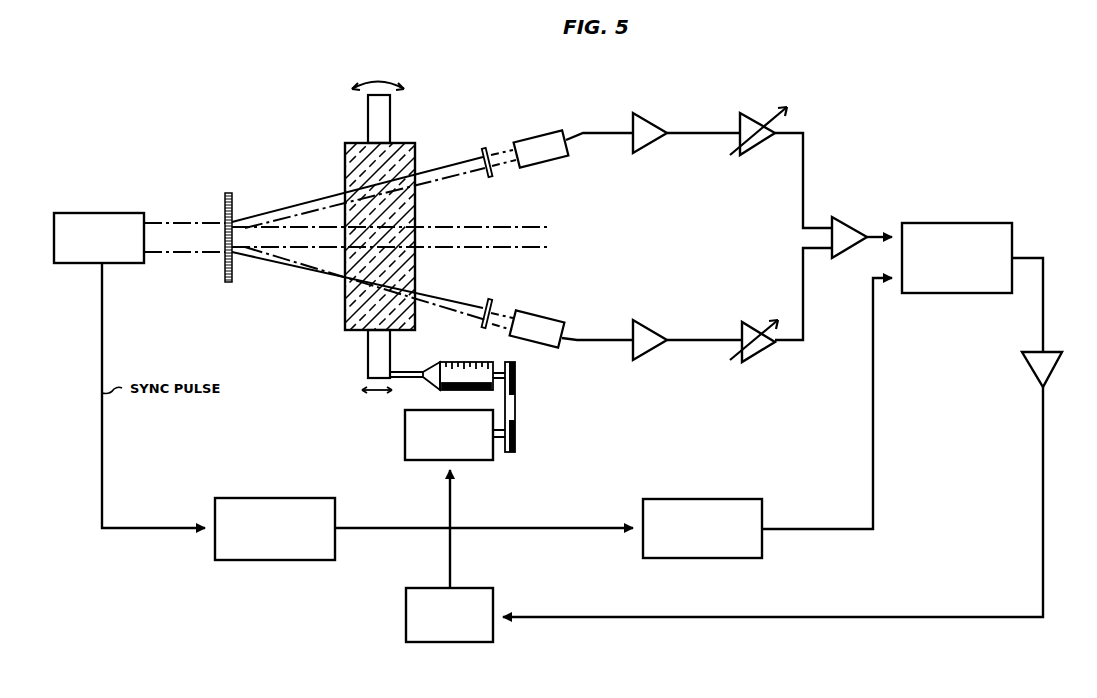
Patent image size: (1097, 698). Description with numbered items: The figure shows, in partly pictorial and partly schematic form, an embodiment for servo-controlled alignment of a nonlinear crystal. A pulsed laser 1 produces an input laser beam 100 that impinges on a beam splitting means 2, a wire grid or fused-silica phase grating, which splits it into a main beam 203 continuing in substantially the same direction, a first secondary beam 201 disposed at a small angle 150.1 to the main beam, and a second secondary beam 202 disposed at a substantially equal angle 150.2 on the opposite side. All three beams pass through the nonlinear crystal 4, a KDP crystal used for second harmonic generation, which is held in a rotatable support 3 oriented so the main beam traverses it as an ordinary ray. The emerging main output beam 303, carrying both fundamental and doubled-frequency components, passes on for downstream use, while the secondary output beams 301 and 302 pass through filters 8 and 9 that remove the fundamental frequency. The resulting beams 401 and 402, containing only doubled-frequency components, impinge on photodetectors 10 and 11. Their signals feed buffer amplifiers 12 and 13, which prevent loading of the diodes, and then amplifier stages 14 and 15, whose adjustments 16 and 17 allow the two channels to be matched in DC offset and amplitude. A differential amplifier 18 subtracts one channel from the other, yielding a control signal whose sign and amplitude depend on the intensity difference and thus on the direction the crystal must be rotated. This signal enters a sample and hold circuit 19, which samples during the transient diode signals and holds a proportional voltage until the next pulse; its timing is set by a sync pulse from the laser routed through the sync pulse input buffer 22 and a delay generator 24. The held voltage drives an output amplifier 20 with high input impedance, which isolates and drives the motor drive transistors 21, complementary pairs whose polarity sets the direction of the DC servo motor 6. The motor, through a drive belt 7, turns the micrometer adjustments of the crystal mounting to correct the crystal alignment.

The pulsed laser 1 is at (96, 213).
The input laser beam 100 is at (167, 225).
The beam splitting means 2 is at (227, 193).
The first secondary beam 201 is at (258, 216).
The second secondary beam 202 is at (262, 259).
The main beam 203 is at (323, 237).
The angle of first secondary beam 150.1 is at (305, 220).
The angle of second secondary beam 150.2 is at (305, 248).
The rotatable support 3 is at (391, 110).
The nonlinear crystal 4 is at (345, 330).
The first secondary output beam 301 is at (456, 178).
The second secondary output beam 302 is at (440, 294).
The main output beam 303 is at (537, 237).
The first filtered beam 401 is at (495, 153).
The second filtered beam 402 is at (500, 322).
The filter 8 is at (491, 177).
The filter 9 is at (491, 299).
The photodetector 10 is at (548, 162).
The photodetector 11 is at (543, 316).
The buffer amplifier 12 is at (647, 150).
The buffer amplifier 13 is at (650, 326).
The amplifier stage 14 is at (757, 153).
The amplifier stage 15 is at (760, 352).
The adjustment 16 is at (788, 106).
The adjustment 17 is at (776, 319).
The differential amplifier 18 is at (850, 222).
The sample and hold circuit 19 is at (948, 223).
The output amplifier 20 is at (1025, 365).
The motor drive transistors 21 is at (406, 612).
The sync pulse input buffer 22 is at (270, 498).
The delay generator 24 is at (689, 499).
The DC servo motor 6 is at (405, 433).
The drive belt 7 is at (515, 400).